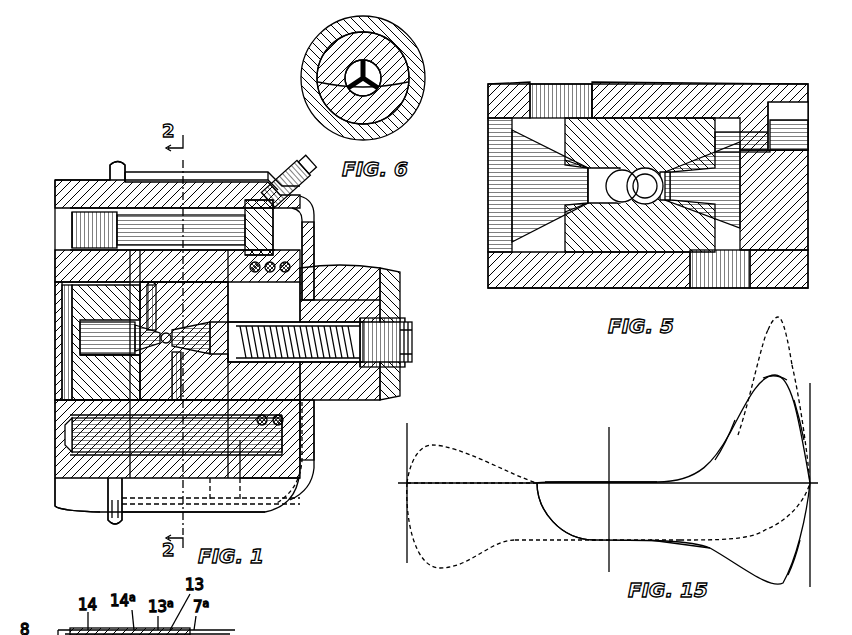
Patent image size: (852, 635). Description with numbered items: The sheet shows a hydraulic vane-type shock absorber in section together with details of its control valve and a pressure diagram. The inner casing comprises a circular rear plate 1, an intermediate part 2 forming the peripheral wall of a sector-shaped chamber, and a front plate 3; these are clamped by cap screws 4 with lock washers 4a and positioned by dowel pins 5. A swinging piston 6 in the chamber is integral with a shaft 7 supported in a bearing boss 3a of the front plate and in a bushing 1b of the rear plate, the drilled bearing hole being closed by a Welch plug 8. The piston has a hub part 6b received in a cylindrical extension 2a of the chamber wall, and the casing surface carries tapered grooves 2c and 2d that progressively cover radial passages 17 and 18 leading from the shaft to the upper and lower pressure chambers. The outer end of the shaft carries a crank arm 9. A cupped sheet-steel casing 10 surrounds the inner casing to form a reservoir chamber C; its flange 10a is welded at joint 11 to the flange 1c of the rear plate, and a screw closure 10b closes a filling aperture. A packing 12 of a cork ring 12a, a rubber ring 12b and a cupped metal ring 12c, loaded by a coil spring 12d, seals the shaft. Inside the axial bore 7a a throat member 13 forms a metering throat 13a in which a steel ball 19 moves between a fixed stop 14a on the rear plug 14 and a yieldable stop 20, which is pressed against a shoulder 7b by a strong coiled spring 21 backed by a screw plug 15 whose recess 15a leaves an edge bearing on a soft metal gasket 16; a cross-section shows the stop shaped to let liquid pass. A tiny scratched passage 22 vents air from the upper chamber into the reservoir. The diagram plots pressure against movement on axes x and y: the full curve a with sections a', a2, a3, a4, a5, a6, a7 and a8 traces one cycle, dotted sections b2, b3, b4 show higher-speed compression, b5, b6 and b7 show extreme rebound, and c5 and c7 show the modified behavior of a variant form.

In FIG. 1, the rear plate-like casing part 1 is at (68, 180).
In FIG. 1, the bearing bushing 1b is at (90, 270).
In FIG. 1, the outwardly turned flange 1c is at (105, 520).
In FIG. 1, the intermediate casing part 2 is at (135, 182).
In FIG. 1, the hollow cylindrical extension 2a is at (202, 492).
In FIG. 1, the tapered grooves 2c is at (179, 266).
In FIG. 1, the tapered grooves 2d is at (179, 451).
In FIG. 1, the front plate-like casing part 3 is at (228, 178).
In FIG. 6, the front plate-like casing part 3 is at (318, 42).
In FIG. 1, the bearing boss 3a is at (251, 459).
In FIG. 1, the cap screws 4 is at (68, 230).
In FIG. 1, the lock washers 4a is at (248, 210).
In FIG. 1, the dowel pins 5 is at (78, 455).
In FIG. 1, the swinging piston 6 is at (135, 406).
In FIG. 5, the swinging piston 6 is at (725, 82).
In FIG. 1, the hub part 6b is at (196, 250).
In FIG. 5, the hub part 6b is at (648, 84).
In FIG. 1, the shaft 7 is at (72, 300).
In FIG. 6, the shaft 7 is at (400, 50).
In FIG. 1, the axial bore 7a is at (355, 300).
In FIG. 6, the axial bore 7a is at (325, 82).
In FIG. 5, the axial bore 7a is at (738, 140).
In FIG. 5, the shoulder 7b is at (786, 100).
In FIG. 1, the Welch plug 8 is at (62, 308).
In FIG. 1, the crank arm 9 is at (398, 284).
In FIG. 1, the outer cupped casing part 10 is at (294, 512).
In FIG. 1, the outwardly turned flange 10a is at (124, 516).
In FIG. 1, the screw closure 10b is at (292, 186).
In FIG. 1, the welded joint 11 is at (114, 527).
In FIG. 1, the packing 12 is at (313, 258).
In FIG. 1, the cork ring 12a is at (304, 418).
In FIG. 1, the rubber ring 12b is at (300, 428).
In FIG. 1, the metal ring 12c is at (298, 450).
In FIG. 1, the coil spring 12d is at (305, 470).
In FIG. 1, the throat member 13 is at (184, 341).
In FIG. 5, the throat member 13 is at (617, 116).
In FIG. 1, the metering throat 13a is at (161, 357).
In FIG. 5, the metering throat 13a is at (622, 254).
In FIG. 1, the plug 14 is at (92, 338).
In FIG. 5, the plug 14 is at (490, 180).
In FIG. 1, the fixed stop 14a is at (135, 358).
In FIG. 5, the fixed stop 14a is at (550, 240).
In FIG. 1, the screw plug 15 is at (410, 322).
In FIG. 1, the recess 15a is at (412, 342).
In FIG. 1, the soft metal gasket 16 is at (384, 392).
In FIG. 1, the radial passage 17 is at (156, 297).
In FIG. 5, the radial passage 17 is at (548, 90).
In FIG. 1, the radial passage 18 is at (175, 398).
In FIG. 5, the radial passage 18 is at (712, 286).
In FIG. 1, the metering valve ball 19 is at (160, 361).
In FIG. 5, the metering valve ball 19 is at (642, 170).
In FIG. 1, the yieldable stop 20 is at (232, 328).
In FIG. 6, the yieldable stop 20 is at (384, 80).
In FIG. 5, the yieldable stop 20 is at (664, 254).
In FIG. 1, the coiled spring 21 is at (340, 300).
In FIG. 1, the small passage 22 is at (112, 178).
In FIG. 1, the reservoir chamber C is at (270, 467).
In FIG. 15, the horizontal axis x is at (607, 485).
In FIG. 15, the vertical axis y is at (606, 501).
In FIG. 15, the full line curve a is at (673, 479).
In FIG. 15, the curve section a' is at (633, 464).
In FIG. 15, the curve section a2 is at (726, 433).
In FIG. 15, the curve point a3 is at (774, 375).
In FIG. 15, the curve section a4 is at (798, 422).
In FIG. 15, the curve section a5 is at (786, 556).
In FIG. 15, the curve section a6 is at (674, 541).
In FIG. 15, the curve section a7 is at (545, 522).
In FIG. 15, the curve section a8 is at (570, 480).
In FIG. 15, the dotted curve section b2 is at (750, 368).
In FIG. 15, the dotted curve section b3 is at (782, 322).
In FIG. 15, the dotted curve section b4 is at (801, 372).
In FIG. 15, the dotted curve section b5 is at (520, 542).
In FIG. 15, the dotted curve section b6 is at (452, 570).
In FIG. 15, the dotted curve section b7 is at (433, 444).
In FIG. 15, the dotted curve section c5 is at (758, 535).
In FIG. 15, the dotted curve section c7 is at (448, 485).